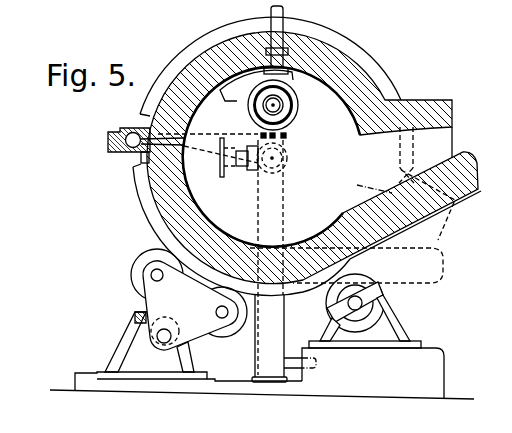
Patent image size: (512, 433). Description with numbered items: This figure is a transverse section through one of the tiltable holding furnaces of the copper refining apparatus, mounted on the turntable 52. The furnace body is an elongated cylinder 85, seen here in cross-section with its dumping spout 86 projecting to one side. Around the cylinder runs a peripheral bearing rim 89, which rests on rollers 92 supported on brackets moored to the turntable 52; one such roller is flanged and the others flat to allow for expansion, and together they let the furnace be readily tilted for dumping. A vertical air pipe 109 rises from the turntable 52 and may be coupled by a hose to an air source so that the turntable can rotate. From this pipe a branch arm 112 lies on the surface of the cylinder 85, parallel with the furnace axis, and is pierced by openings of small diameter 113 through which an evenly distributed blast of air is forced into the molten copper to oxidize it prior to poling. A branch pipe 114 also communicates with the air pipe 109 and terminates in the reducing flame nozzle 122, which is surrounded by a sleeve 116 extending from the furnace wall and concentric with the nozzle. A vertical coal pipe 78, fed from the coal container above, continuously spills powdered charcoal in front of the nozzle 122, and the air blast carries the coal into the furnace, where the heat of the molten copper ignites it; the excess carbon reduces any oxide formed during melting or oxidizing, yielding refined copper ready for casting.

The turntable 52 is at (459, 399).
The vertical coal pipe 78 is at (283, 13).
The elongated cylinder 85 is at (170, 210).
The dumping spout 86 is at (445, 145).
The peripheral bearing rim 89 is at (213, 40).
The rollers 92 is at (135, 268).
The vertical air pipe 109 is at (258, 350).
The branch arm 112 is at (142, 128).
The openings of small diameter 113 is at (143, 156).
The branch pipe 114 is at (286, 134).
The sleeve 116 is at (256, 112).
The reducing flame nozzle 122 is at (260, 106).